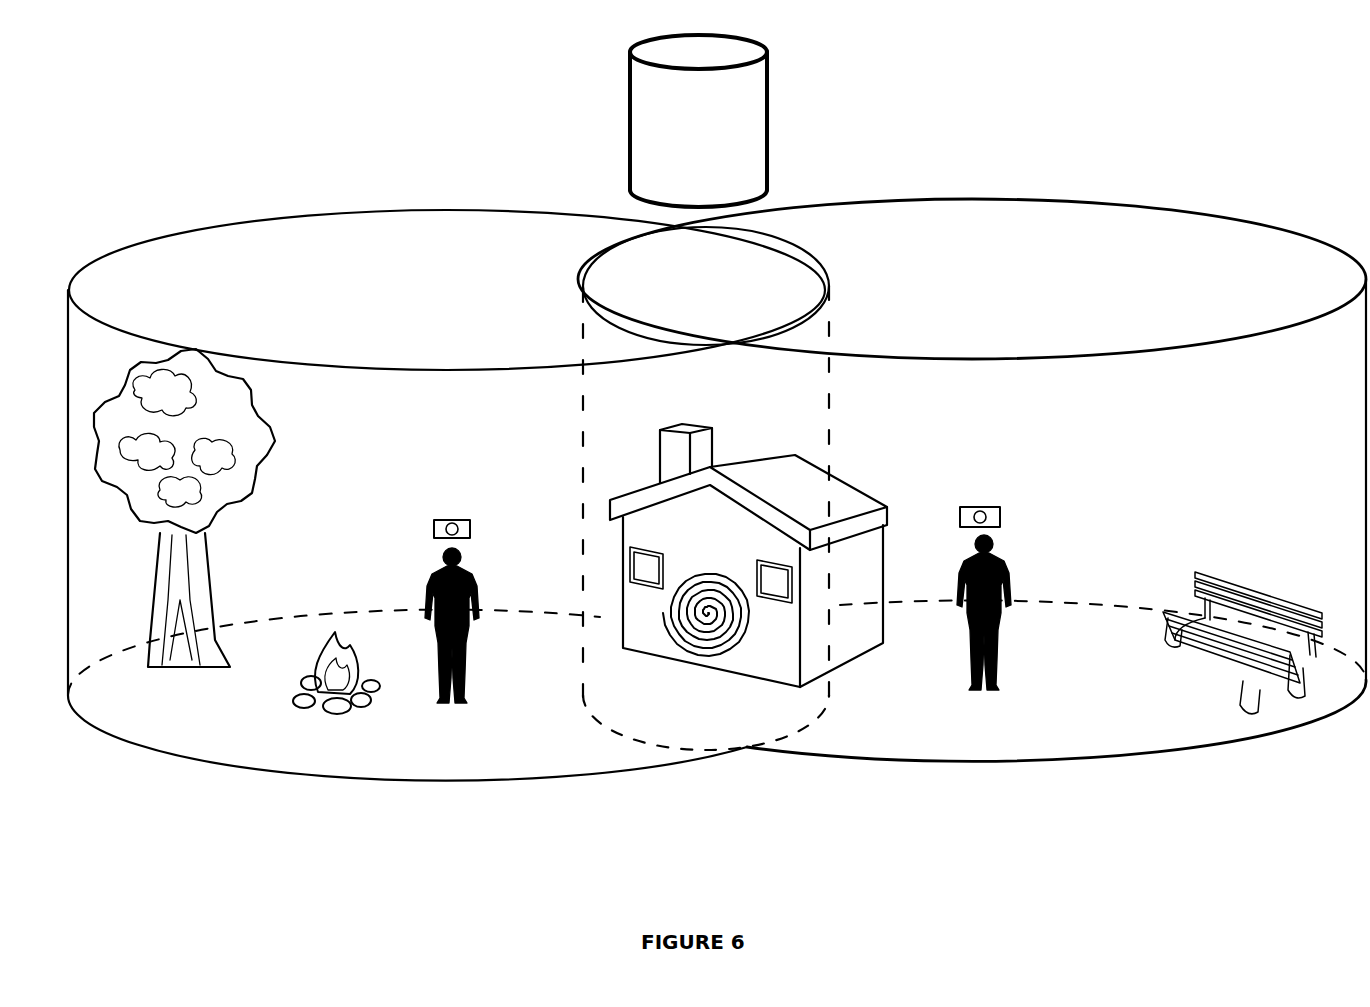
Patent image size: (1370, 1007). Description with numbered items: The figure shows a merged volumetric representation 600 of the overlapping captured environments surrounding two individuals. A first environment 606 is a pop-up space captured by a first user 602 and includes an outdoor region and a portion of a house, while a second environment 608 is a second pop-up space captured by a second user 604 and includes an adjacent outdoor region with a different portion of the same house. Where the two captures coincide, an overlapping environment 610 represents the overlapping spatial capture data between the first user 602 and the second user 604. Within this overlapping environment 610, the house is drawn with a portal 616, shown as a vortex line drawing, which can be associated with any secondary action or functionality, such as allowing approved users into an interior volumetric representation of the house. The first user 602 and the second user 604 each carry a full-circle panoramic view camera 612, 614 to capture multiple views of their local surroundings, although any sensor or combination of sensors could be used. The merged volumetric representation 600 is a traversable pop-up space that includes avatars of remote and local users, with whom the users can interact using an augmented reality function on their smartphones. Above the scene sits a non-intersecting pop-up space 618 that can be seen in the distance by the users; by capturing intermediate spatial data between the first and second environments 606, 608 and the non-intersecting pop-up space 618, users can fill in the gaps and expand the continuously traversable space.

The merged volumetric representation 600 is at (1189, 99).
The first user 602 is at (431, 585).
The second user 604 is at (995, 546).
The first environment 606 is at (249, 218).
The second environment 608 is at (960, 198).
The overlapping environment 610 is at (718, 281).
The 360° view camera 612 is at (431, 523).
The 360° view camera 614 is at (975, 507).
The portal 616 is at (719, 568).
The non-intersecting pop-up space 618 is at (626, 98).